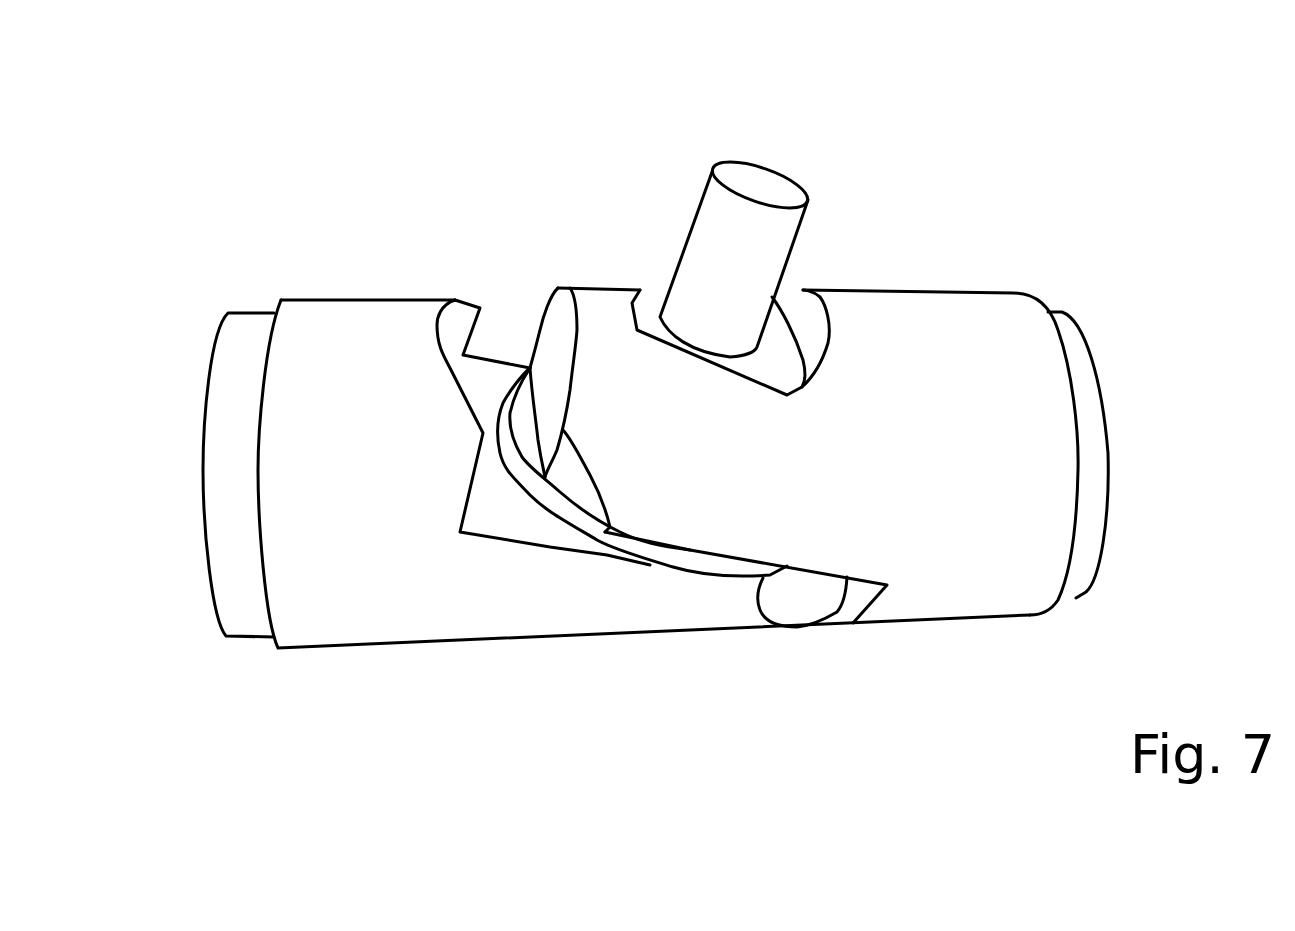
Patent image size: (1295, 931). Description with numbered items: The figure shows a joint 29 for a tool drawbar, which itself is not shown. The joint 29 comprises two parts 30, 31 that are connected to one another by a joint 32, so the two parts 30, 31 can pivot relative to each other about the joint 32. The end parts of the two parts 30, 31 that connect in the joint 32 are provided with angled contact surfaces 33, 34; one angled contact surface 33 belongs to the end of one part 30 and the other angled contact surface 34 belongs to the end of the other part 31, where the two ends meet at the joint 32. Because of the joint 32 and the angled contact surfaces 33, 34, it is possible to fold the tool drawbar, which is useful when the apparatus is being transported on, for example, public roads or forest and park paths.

The joint 29 is at (1122, 142).
The part 30 is at (225, 527).
The part 31 is at (1062, 622).
The joint 32 is at (737, 215).
The angled contact surface 33 is at (547, 548).
The angled contact surface 34 is at (797, 625).